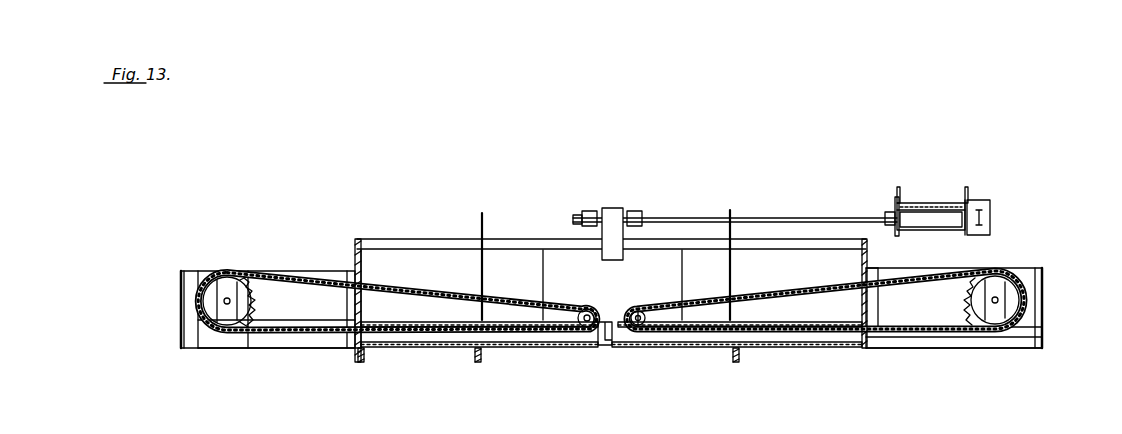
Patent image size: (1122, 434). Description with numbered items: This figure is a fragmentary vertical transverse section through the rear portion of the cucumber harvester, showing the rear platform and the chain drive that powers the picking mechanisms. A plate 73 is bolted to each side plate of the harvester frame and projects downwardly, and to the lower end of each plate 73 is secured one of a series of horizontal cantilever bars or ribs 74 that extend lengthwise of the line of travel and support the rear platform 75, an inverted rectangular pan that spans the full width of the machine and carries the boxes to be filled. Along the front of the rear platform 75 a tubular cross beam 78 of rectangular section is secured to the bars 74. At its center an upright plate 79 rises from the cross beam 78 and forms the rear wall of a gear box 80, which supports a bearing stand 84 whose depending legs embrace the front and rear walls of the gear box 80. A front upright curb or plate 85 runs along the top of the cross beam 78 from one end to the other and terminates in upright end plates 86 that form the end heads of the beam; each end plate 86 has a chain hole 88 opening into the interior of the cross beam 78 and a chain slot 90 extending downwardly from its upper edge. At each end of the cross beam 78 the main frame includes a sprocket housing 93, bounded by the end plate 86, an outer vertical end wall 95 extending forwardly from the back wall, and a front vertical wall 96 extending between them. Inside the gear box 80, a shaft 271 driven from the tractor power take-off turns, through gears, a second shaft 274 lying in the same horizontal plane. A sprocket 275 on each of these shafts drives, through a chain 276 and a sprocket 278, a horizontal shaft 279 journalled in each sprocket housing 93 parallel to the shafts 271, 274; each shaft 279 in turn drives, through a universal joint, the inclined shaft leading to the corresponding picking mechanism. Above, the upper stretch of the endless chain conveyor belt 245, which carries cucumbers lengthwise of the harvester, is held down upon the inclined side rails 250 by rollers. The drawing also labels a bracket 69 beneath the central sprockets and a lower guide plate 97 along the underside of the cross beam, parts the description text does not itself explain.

The bracket 69 is at (603, 347).
The plate 73 is at (482, 214).
The horizontal cantilever bar 74 is at (478, 362).
The rear platform 75 is at (905, 345).
The tubular cross beam 78 is at (522, 348).
The upright plate 79 is at (657, 260).
The gear box 80 is at (711, 228).
The bearing stand 84 is at (628, 244).
The front upright curb 85 is at (433, 249).
The upright end plate 86 is at (361, 303).
The chain hole 88 is at (355, 335).
The chain slot 90 is at (357, 257).
The sprocket housing 93 is at (189, 256).
The outer vertical end wall 95 is at (181, 331).
The front vertical wall 96 is at (276, 348).
The lower guide plate 97 is at (893, 340).
The endless chain conveyor belt 245 is at (939, 204).
The inclined side rail 250 is at (899, 192).
The shaft 271 is at (636, 330).
The second shaft 274 is at (592, 314).
The sprocket 275 is at (584, 312).
The chain 276 is at (447, 293).
The sprocket 278 is at (205, 301).
The horizontal shaft 279 is at (232, 301).